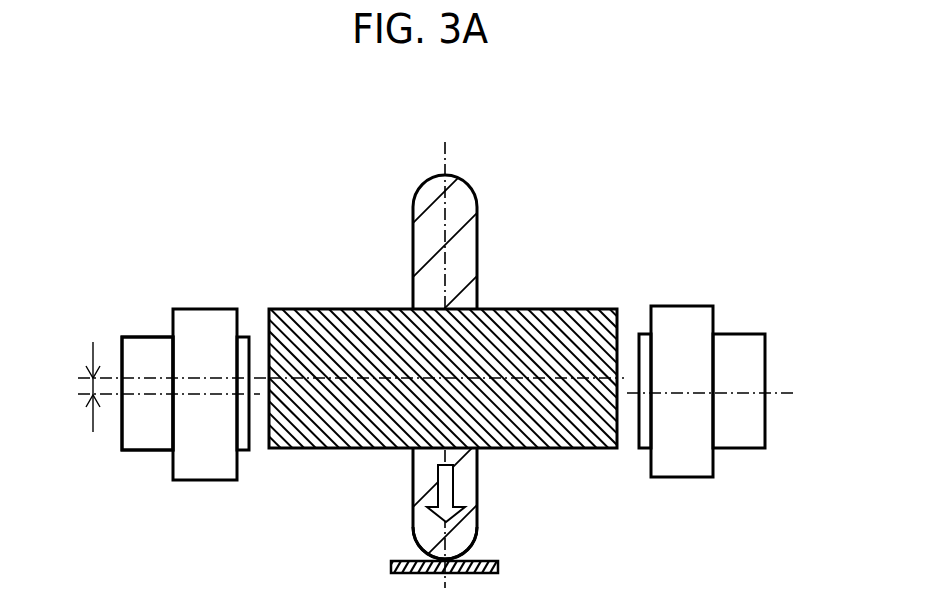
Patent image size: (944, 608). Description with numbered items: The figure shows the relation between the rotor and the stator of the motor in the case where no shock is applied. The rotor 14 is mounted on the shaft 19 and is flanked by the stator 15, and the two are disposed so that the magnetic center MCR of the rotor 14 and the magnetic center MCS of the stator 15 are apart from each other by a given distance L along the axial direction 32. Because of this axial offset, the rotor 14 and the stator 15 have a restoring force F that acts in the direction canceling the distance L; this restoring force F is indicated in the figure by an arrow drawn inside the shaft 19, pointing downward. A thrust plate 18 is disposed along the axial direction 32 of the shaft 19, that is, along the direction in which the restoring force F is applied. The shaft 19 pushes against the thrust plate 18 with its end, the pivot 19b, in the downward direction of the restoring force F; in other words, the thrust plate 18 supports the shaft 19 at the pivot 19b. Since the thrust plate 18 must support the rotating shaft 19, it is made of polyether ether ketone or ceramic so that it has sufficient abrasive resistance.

The rotor 14 is at (327, 331).
The stator 15 is at (737, 333).
The thrust plate 18 is at (500, 560).
The shaft 19 is at (462, 210).
The pivot 19b is at (437, 558).
The axial direction 32 is at (445, 143).
The magnetic center of rotor MCR is at (147, 377).
The magnetic center of stator MCS is at (146, 395).
The distance L is at (74, 387).
The restoring force F is at (457, 481).